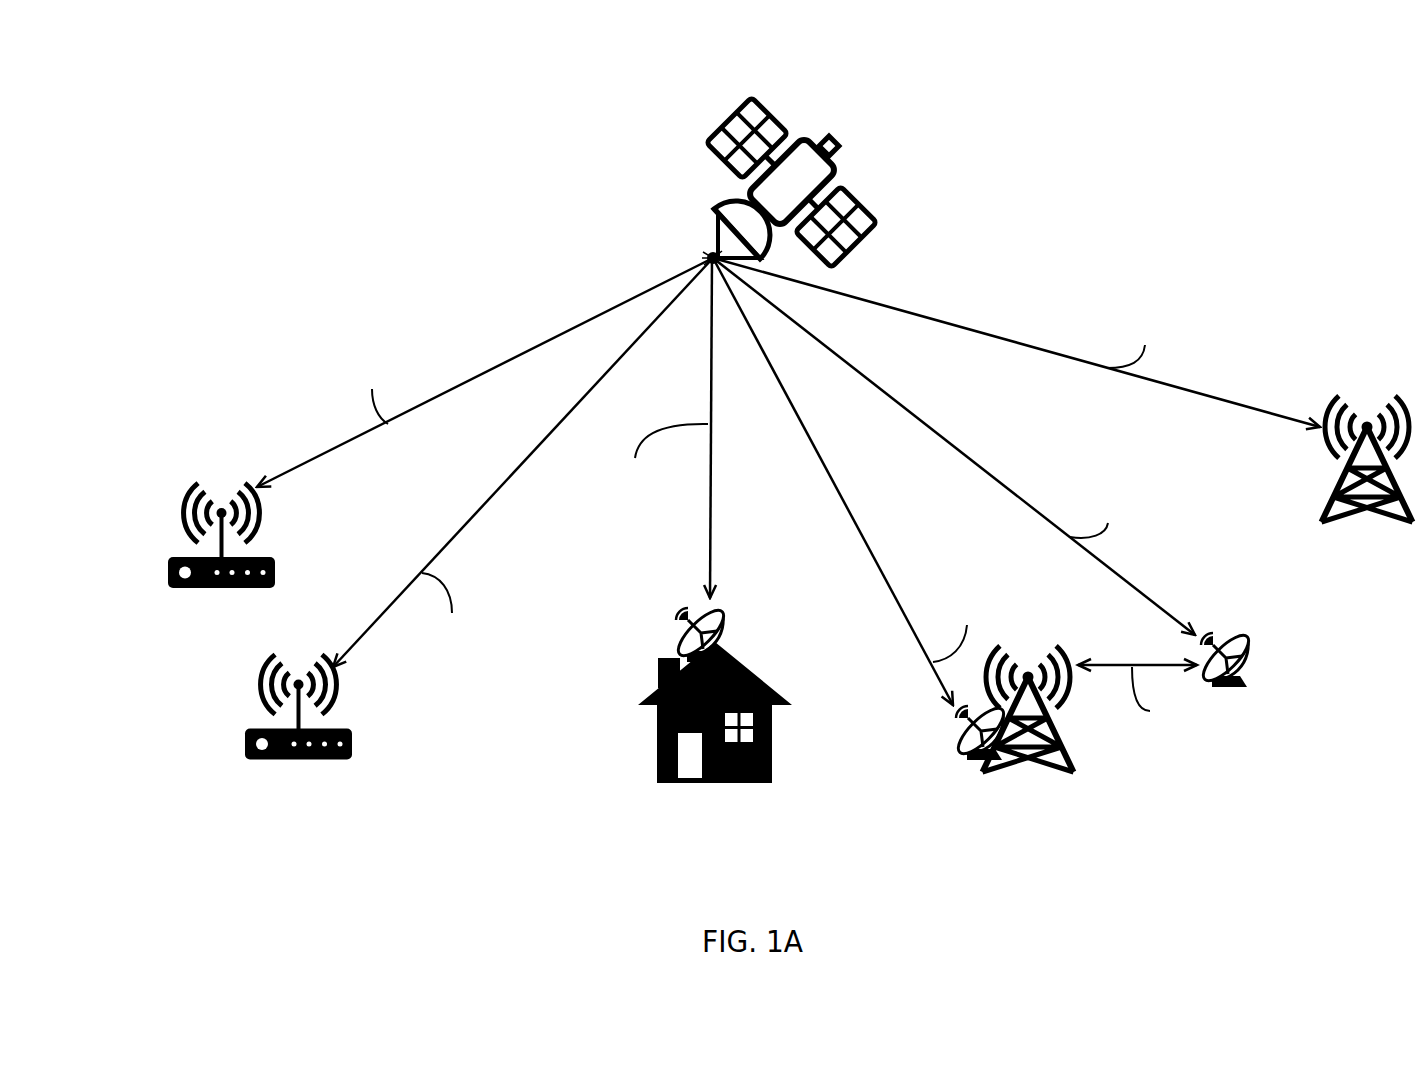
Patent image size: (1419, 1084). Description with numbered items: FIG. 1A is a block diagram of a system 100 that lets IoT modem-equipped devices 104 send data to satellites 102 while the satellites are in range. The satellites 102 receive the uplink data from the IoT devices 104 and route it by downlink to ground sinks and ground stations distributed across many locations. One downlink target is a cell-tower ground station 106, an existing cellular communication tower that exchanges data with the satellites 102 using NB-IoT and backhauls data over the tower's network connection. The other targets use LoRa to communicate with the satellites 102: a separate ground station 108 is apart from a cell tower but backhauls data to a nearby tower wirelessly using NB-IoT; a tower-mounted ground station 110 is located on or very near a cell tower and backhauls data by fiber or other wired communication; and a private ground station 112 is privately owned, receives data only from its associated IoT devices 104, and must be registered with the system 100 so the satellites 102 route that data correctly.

The system 100 is at (1274, 132).
The satellites 102 is at (713, 215).
The IoT modem-equipped devices 104 is at (168, 562).
The Type 1 ground station 106 is at (1323, 505).
The Type 2A ground station 108 is at (1253, 673).
The Type 2B ground station 110 is at (960, 743).
The Type 2C ground station 112 is at (680, 650).